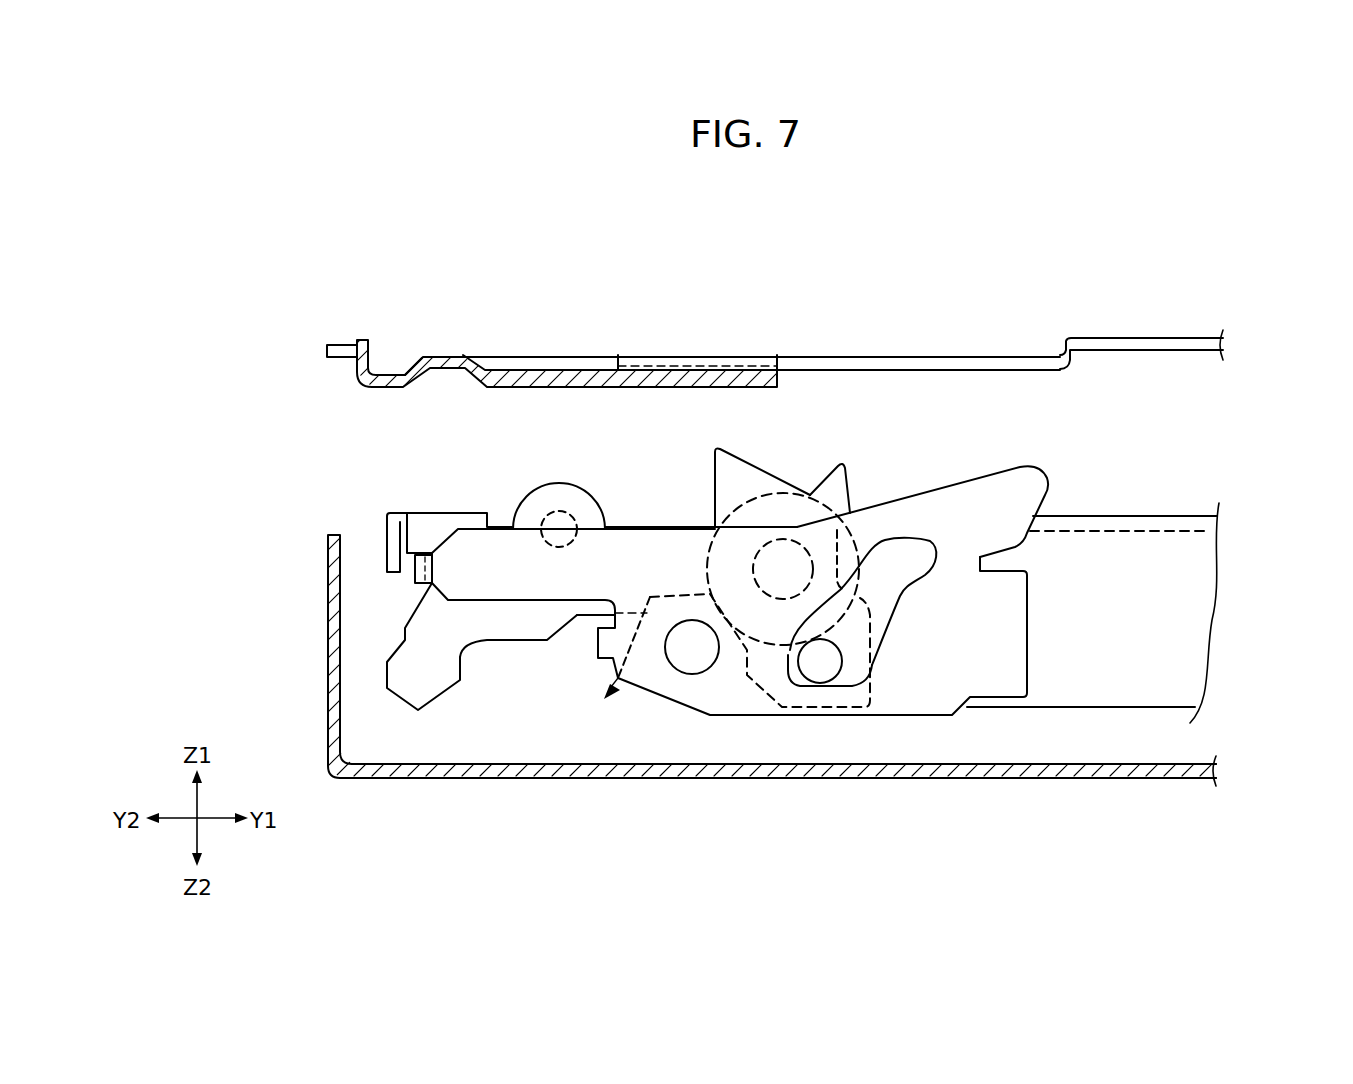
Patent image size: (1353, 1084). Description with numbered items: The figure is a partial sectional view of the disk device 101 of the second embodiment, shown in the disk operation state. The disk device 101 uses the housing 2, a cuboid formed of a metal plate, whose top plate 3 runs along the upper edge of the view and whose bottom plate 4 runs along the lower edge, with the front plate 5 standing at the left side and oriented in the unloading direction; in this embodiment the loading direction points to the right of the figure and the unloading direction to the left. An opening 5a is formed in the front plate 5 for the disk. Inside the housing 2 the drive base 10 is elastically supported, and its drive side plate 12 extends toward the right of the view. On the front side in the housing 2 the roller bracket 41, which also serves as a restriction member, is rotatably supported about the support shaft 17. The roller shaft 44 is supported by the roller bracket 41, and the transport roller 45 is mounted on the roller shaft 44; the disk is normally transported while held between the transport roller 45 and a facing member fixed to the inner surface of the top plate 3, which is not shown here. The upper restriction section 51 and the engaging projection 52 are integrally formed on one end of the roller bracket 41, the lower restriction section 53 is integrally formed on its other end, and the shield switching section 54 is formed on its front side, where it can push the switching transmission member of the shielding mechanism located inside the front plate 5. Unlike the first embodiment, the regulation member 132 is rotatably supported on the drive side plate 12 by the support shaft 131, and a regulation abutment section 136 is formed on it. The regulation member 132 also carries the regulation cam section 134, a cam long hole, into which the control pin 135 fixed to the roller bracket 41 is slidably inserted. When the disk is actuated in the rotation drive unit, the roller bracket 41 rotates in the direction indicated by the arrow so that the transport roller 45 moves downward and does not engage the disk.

The disk device 101 is at (777, 502).
The housing 2 is at (1046, 320).
The top plate 3 is at (945, 350).
The bottom plate 4 is at (1084, 777).
The front plate 5 is at (327, 568).
The opening 5a is at (346, 425).
The drive base 10 is at (1196, 564).
The drive side plate 12 is at (1176, 681).
The support shaft 17 is at (558, 523).
The roller bracket 41 is at (517, 655).
The roller shaft 44 is at (772, 568).
The transport roller 45 is at (857, 545).
The upper restriction section 51 is at (755, 465).
The engaging projection 52 is at (823, 470).
The lower restriction section 53 is at (410, 706).
The shield switching section 54 is at (394, 570).
The support shaft 131 is at (693, 652).
The regulation member 132 is at (1046, 661).
The regulation cam section 134 is at (880, 603).
The control pin 135 is at (820, 662).
The regulation abutment section 136 is at (1027, 487).